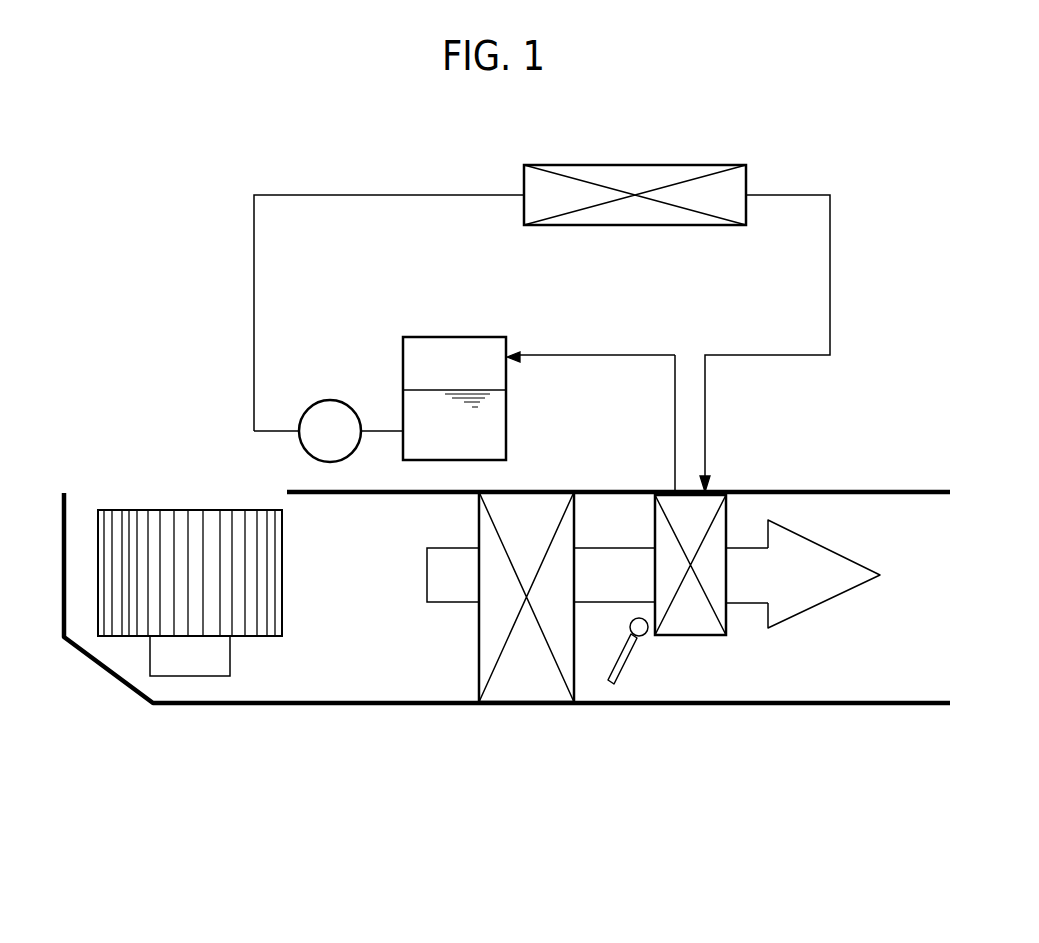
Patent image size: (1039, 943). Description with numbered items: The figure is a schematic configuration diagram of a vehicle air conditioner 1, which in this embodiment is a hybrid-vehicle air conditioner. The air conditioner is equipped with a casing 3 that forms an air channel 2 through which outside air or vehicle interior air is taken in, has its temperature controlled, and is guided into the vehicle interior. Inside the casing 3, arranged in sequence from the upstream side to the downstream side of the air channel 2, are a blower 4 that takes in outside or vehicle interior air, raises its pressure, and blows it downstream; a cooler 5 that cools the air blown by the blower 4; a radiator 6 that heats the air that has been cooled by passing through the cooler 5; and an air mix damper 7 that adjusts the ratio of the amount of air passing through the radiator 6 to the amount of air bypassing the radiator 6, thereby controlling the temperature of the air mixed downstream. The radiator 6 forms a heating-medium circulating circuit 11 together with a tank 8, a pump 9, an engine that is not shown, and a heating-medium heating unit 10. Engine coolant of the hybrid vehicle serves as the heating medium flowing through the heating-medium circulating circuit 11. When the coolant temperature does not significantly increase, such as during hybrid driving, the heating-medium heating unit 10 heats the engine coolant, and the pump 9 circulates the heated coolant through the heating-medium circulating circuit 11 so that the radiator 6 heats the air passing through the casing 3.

The vehicle air conditioner 1 is at (507, 655).
The air channel 2 is at (330, 666).
The casing 3 is at (818, 705).
The blower 4 is at (153, 510).
The cooler 5 is at (533, 683).
The radiator 6 is at (700, 636).
The air mix damper 7 is at (641, 667).
The tank 8 is at (452, 337).
The pump 9 is at (331, 400).
The heating-medium heating unit 10 is at (651, 165).
The heating-medium circulating circuit 11 is at (348, 186).